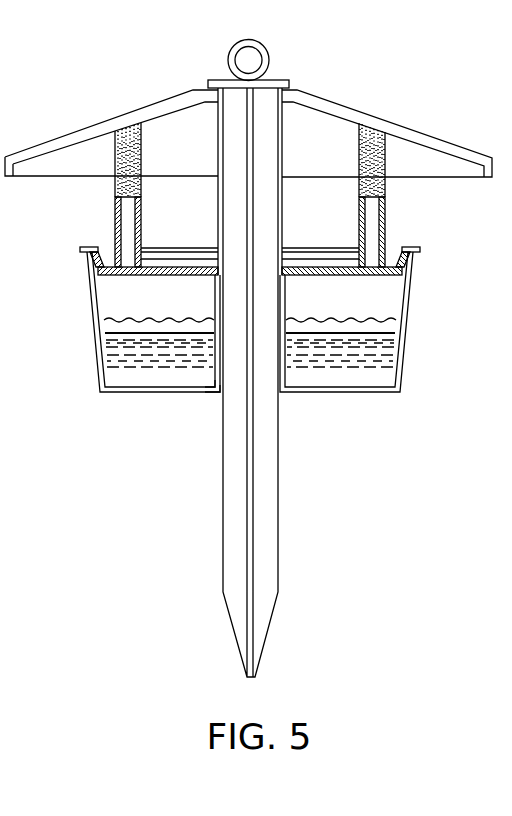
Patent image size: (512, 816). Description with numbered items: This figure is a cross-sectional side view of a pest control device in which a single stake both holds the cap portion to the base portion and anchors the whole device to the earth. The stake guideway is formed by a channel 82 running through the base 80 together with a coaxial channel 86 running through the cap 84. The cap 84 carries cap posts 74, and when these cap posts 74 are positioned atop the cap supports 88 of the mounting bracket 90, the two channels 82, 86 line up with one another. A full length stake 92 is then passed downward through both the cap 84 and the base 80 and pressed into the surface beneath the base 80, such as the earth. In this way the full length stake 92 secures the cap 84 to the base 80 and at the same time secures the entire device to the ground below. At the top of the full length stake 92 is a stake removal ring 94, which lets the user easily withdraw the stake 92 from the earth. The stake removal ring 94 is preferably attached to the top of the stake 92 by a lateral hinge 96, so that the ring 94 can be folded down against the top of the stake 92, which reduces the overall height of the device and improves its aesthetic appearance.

The cap post 74 is at (141, 150).
The base 80 is at (411, 300).
The channel 82 is at (221, 394).
The cap 84 is at (403, 125).
The coaxial channel 86 is at (282, 117).
The cap support 88 is at (141, 205).
The mounting bracket 90 is at (156, 263).
The full length stake 92 is at (271, 474).
The stake removal ring 94 is at (269, 58).
The lateral hinge 96 is at (228, 75).